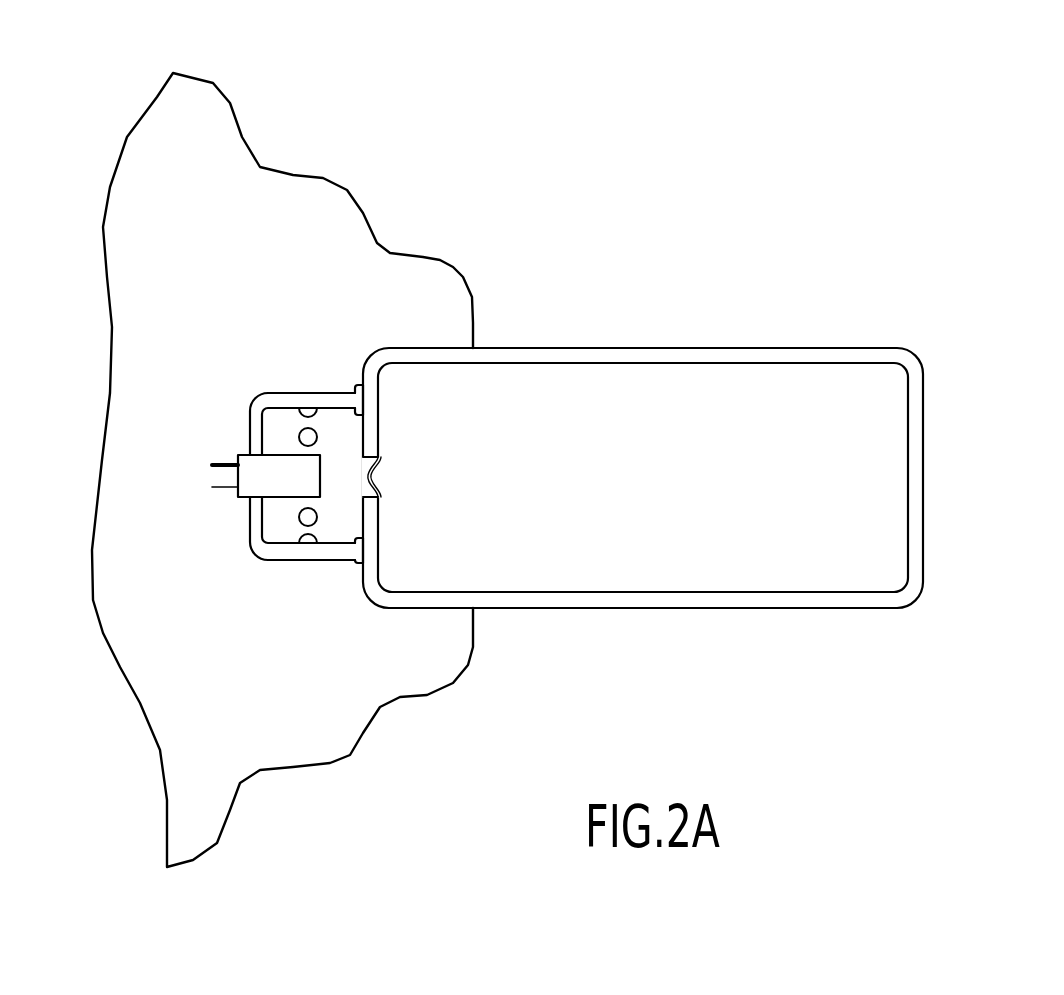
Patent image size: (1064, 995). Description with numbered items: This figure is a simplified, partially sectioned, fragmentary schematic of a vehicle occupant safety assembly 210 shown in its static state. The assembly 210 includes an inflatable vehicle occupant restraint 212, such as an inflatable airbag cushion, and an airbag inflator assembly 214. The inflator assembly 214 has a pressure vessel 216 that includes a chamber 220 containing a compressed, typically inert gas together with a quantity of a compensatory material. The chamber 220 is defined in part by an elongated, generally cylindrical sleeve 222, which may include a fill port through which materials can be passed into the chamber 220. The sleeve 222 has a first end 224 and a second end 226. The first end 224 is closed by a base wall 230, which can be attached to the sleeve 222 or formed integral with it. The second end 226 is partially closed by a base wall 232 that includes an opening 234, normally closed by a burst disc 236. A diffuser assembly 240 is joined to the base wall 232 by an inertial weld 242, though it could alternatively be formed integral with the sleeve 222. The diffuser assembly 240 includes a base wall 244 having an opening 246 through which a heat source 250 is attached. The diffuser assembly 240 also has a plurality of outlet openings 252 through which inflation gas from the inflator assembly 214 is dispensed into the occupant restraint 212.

The vehicle occupant safety assembly 210 is at (702, 248).
The inflatable vehicle occupant restraint 212 is at (328, 178).
The airbag inflator assembly 214 is at (790, 345).
The pressure vessel 216 is at (636, 608).
The chamber 220 is at (852, 383).
The sleeve 222 is at (604, 347).
The first end 224 is at (880, 628).
The second end 226 is at (377, 327).
The base wall 230 is at (913, 488).
The base wall 232 is at (373, 535).
The opening 234 is at (360, 462).
The burst disc 236 is at (372, 477).
The diffuser assembly 240 is at (247, 476).
The inertial weld 242 is at (355, 567).
The base wall 244 is at (257, 422).
The opening 246 is at (245, 515).
The heat source 250 is at (240, 475).
The outlet openings 252 is at (297, 518).